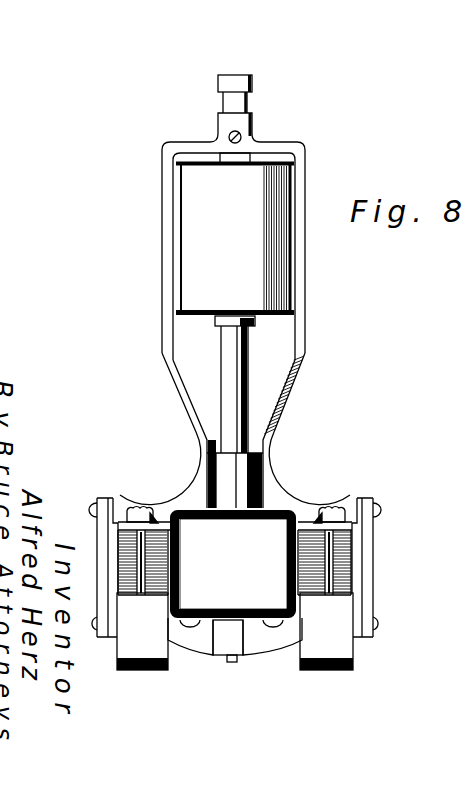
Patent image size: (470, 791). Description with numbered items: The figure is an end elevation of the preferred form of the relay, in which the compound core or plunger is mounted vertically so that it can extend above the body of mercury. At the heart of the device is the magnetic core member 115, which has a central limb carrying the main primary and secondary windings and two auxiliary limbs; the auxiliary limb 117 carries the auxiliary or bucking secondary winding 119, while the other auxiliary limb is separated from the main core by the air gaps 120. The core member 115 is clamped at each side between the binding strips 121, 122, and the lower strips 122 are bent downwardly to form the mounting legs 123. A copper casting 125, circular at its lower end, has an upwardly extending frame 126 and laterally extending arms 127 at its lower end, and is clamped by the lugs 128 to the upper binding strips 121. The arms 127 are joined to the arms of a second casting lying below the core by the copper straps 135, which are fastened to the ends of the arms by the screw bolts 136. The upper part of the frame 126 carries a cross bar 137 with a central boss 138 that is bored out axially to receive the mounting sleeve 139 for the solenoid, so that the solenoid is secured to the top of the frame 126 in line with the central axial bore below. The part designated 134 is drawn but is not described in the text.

The auxiliary limb 117 is at (252, 81).
The mounting sleeve 139 is at (252, 112).
The central boss 138 is at (218, 132).
The cross bar 137 is at (272, 147).
The air gaps 120 is at (263, 257).
The frame 126 is at (300, 335).
The copper casting 125 is at (210, 475).
The lugs 128 is at (277, 528).
The auxiliary or bucking secondary winding 119 is at (233, 564).
The lower housing 134 is at (272, 643).
The copper straps 135 is at (103, 560).
The screw bolts 136 is at (94, 510).
The laterally extending arms 127 is at (132, 505).
The binding strips 121 is at (330, 527).
The core member 115 is at (337, 558).
The binding strips 122 is at (148, 603).
The mounting legs 123 is at (320, 650).